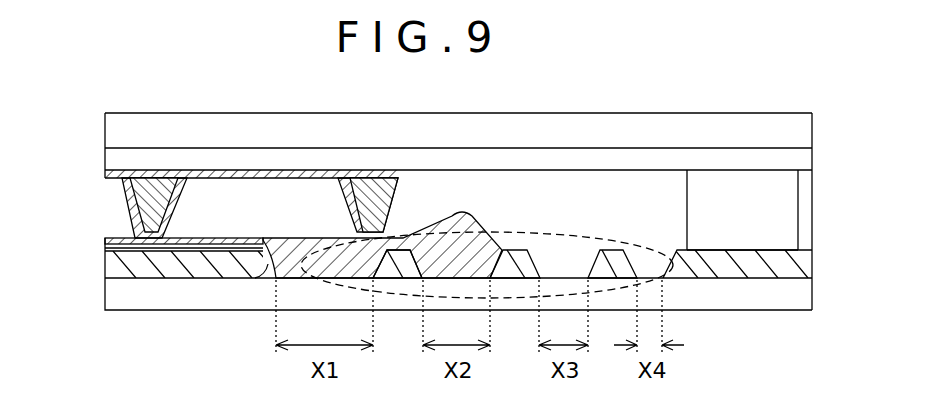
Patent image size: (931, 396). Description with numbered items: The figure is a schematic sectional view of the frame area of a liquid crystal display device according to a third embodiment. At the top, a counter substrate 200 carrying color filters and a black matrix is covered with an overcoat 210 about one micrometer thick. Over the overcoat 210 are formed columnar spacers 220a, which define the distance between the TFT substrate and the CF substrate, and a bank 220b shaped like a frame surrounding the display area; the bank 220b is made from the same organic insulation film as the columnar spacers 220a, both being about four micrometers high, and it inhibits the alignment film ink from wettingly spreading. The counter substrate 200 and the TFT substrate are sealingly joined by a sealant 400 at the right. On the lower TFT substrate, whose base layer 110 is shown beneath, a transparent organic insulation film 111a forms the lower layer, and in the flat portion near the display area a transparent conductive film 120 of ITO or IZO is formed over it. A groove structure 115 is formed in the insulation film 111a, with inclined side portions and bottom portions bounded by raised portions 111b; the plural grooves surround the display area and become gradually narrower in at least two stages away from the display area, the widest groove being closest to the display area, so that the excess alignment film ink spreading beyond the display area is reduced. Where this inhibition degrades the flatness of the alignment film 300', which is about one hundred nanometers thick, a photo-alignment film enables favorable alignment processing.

The counter substrate 200 is at (112, 133).
The overcoat 210 is at (115, 164).
The columnar spacers 220a is at (153, 185).
The bank 220b is at (373, 185).
The groove structure 115 is at (518, 232).
The sealant 400 is at (743, 197).
The alignment film 300' is at (266, 227).
The transparent conductive film 120 is at (115, 247).
The transparent organic insulation film 111a is at (117, 260).
The first substrate 110 is at (117, 297).
The protrusions of insulating layer 111b is at (617, 260).